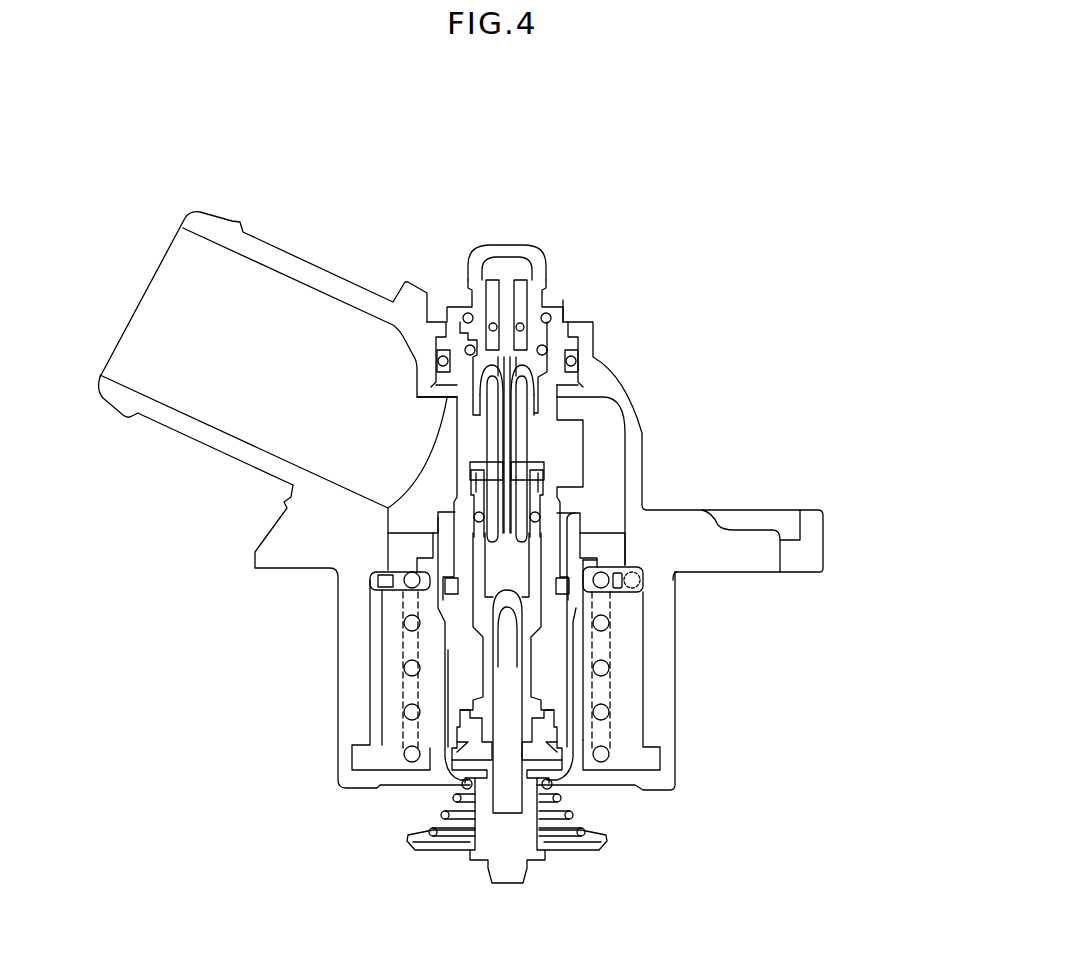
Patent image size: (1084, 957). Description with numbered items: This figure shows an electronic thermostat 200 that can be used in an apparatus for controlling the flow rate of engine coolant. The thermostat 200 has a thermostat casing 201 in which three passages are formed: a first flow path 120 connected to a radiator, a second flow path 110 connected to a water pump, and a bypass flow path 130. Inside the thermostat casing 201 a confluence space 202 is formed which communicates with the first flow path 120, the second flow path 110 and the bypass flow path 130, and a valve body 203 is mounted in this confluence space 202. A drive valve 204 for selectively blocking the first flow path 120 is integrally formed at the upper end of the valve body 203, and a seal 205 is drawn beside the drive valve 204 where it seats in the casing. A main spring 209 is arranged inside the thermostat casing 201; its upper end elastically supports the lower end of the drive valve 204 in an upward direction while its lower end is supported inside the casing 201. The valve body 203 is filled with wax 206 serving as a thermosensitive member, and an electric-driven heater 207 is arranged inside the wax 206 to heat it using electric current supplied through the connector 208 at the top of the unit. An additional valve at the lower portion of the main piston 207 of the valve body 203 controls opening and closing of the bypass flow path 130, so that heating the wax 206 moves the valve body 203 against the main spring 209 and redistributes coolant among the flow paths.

The first flow path 120 is at (205, 283).
The connector 208 is at (528, 282).
The thermostat 200 is at (695, 446).
The seal 205 is at (640, 582).
The drive valve 204 is at (642, 587).
The wax 206 is at (485, 608).
The valve body 203 is at (477, 660).
The thermostat casing 201 is at (347, 708).
The main spring 209 is at (403, 713).
The confluence space 202 is at (633, 650).
The electric-driven heater 207 is at (512, 663).
The second flow path 110 is at (662, 727).
The bypass flow path 130 is at (613, 786).